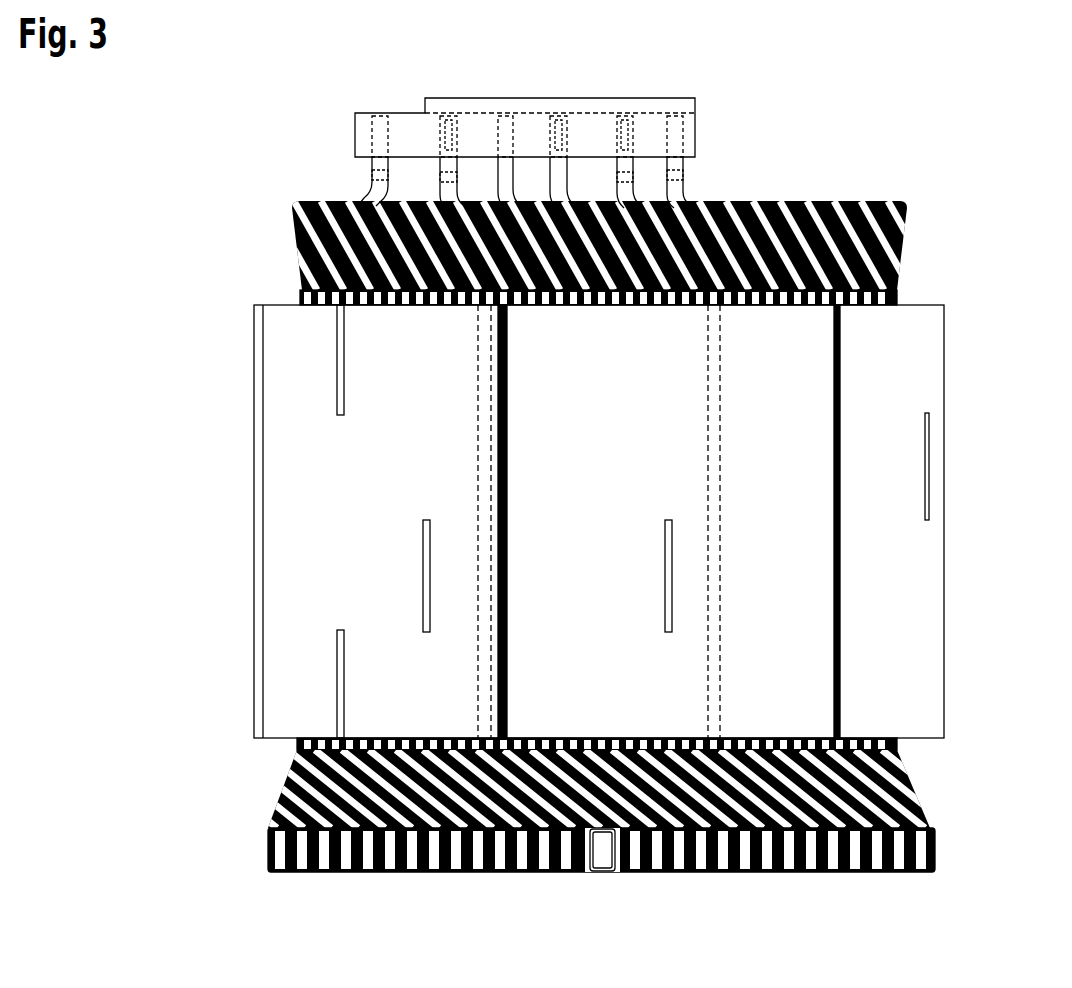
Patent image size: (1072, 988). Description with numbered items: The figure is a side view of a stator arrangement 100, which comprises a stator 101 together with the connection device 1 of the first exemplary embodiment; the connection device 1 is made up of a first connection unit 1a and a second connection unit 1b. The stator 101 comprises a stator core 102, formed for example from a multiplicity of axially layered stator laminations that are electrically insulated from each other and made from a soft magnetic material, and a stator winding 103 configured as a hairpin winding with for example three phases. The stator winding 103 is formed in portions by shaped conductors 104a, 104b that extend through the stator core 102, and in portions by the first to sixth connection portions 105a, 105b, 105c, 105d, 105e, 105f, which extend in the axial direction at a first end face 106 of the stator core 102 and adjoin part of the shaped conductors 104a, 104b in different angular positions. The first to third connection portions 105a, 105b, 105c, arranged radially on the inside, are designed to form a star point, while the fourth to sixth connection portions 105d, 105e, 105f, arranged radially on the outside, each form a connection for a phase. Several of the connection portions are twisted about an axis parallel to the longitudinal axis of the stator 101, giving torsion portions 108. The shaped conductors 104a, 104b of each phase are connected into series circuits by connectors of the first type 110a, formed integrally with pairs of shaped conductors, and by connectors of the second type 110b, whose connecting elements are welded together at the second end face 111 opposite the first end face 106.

The connection device 1 is at (703, 115).
The first connection unit 1a is at (366, 113).
The second connection unit 1b is at (685, 97).
The stator arrangement 100 is at (965, 150).
The stator 101 is at (940, 262).
The stator core 102 is at (946, 358).
The stator winding 103 is at (296, 224).
The shaped conductor 104a is at (478, 470).
The shaped conductor 104b is at (708, 425).
The first connection portion 105a is at (610, 160).
The second connection portion 105b is at (370, 163).
The third connection portion 105c is at (497, 185).
The fourth connection portion 105d is at (687, 163).
The fifth connection portion 105e is at (436, 160).
The sixth connection portion 105f is at (541, 160).
The first end face 106 is at (268, 303).
The torsion portion 108 is at (457, 175).
The connector of the first type 110a is at (640, 306).
The connector of the second type 110b is at (611, 873).
The second end face 111 is at (278, 752).